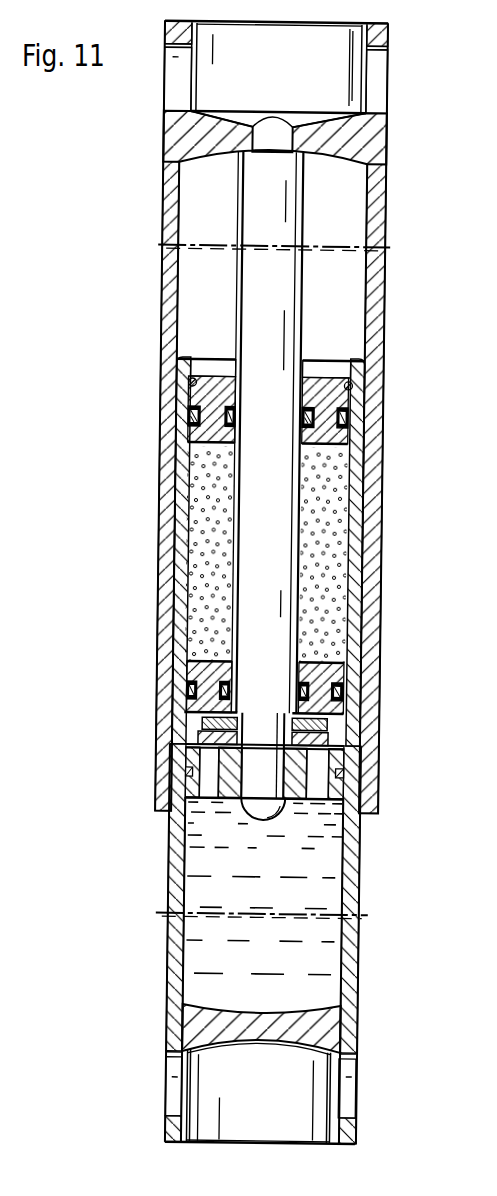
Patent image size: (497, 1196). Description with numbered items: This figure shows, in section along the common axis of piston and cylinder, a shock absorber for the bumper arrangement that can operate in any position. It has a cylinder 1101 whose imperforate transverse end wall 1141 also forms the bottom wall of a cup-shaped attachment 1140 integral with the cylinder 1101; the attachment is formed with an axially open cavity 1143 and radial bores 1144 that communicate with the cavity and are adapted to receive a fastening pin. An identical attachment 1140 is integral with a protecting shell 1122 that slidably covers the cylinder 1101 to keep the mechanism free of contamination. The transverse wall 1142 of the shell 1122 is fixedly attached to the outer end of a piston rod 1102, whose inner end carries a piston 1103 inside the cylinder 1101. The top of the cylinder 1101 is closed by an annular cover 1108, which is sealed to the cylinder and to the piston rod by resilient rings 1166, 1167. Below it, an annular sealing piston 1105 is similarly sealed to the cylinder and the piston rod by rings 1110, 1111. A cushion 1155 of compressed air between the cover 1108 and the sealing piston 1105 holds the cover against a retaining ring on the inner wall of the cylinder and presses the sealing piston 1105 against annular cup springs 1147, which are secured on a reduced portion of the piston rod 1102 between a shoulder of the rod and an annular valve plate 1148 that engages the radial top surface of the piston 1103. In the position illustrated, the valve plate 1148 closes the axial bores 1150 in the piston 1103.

The cup-shaped attachment 1140 is at (390, 61).
The protecting shell 1122 is at (373, 207).
The radial bores 1144 is at (174, 92).
The axially open cavity 1143 is at (197, 68).
The transverse wall 1142 is at (334, 135).
The piston rod 1102 is at (247, 198).
The annular sealing piston 1105 is at (228, 667).
The annular cover 1108 is at (316, 388).
The resilient ring 1167 is at (301, 418).
The resilient ring 1166 is at (345, 413).
The cushion of compressed air 1155 is at (312, 552).
The ring 1110 is at (188, 690).
The ring 1111 is at (230, 690).
The annular valve plate 1148 is at (200, 733).
The annular cup springs 1147 is at (325, 727).
The cylinder 1101 is at (356, 862).
The piston 1103 is at (230, 790).
The axial bores 1150 is at (318, 792).
The imperforate transverse end wall 1141 is at (319, 1028).